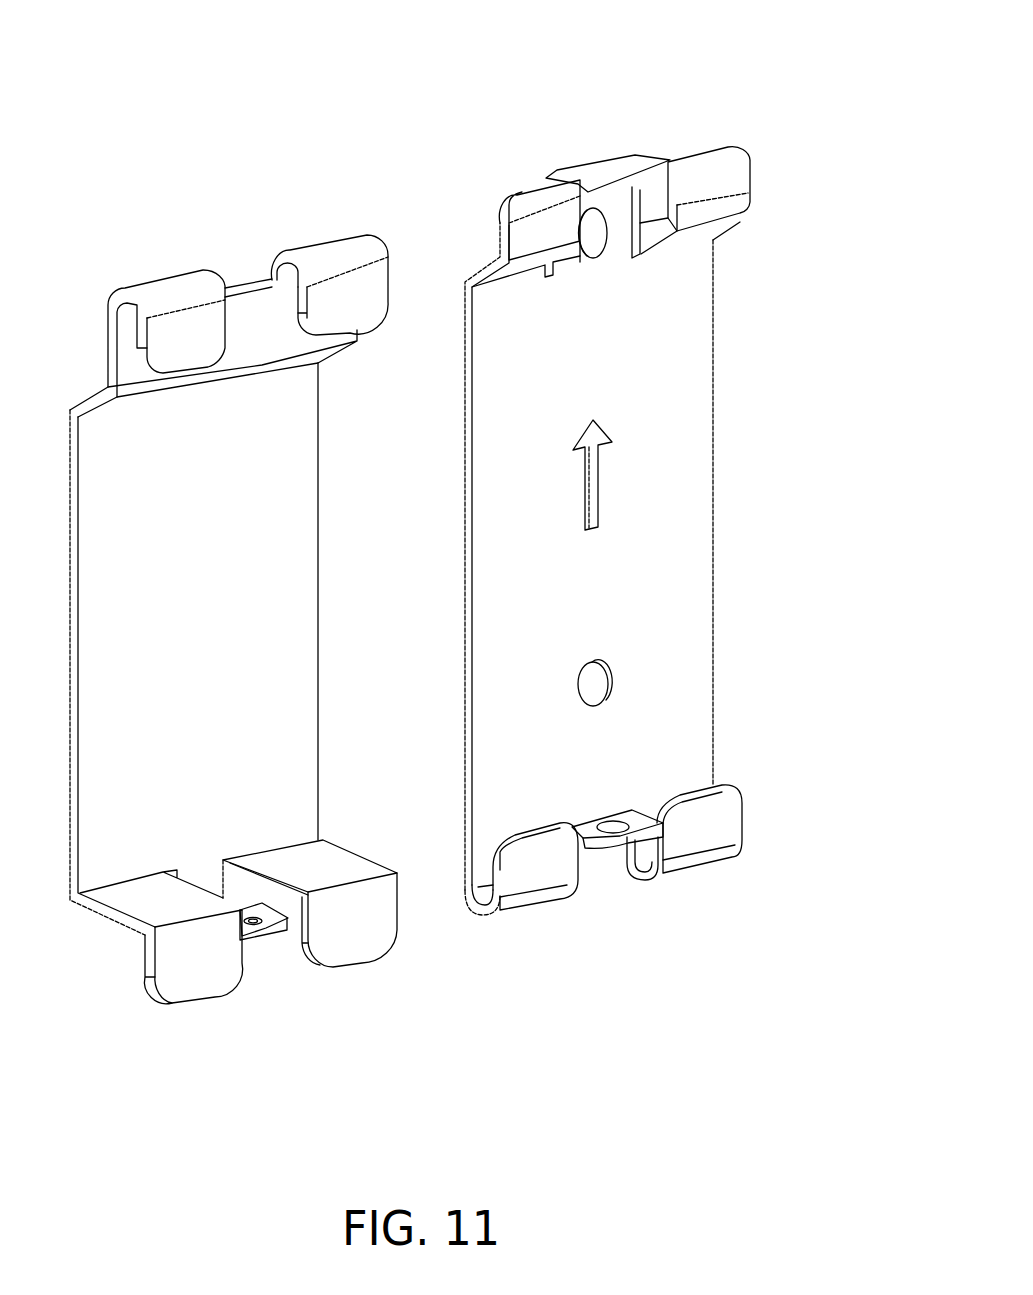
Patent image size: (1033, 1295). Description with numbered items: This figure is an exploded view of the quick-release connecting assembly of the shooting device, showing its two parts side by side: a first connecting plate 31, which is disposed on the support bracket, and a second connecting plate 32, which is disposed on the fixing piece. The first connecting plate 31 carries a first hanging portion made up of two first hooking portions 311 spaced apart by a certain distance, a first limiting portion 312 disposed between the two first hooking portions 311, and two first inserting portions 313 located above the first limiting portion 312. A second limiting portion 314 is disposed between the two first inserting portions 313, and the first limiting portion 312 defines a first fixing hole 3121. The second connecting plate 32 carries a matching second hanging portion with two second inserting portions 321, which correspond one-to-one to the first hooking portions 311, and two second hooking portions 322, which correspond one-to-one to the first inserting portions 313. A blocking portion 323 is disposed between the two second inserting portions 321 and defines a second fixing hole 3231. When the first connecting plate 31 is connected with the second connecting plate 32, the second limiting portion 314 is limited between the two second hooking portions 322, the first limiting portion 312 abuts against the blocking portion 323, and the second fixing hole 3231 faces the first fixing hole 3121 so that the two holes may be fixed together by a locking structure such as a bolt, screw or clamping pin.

The first connecting plate 31 is at (541, 33).
The second connecting plate 32 is at (170, 145).
The first hooking portion 311 is at (533, 863).
The first limiting portion 312 is at (638, 838).
The first fixing hole 3121 is at (613, 827).
The first inserting portion 313 is at (540, 190).
The second limiting portion 314 is at (618, 168).
The second inserting portion 321 is at (197, 975).
The second hooking portion 322 is at (170, 283).
The blocking portion 323 is at (265, 935).
The second fixing hole 3231 is at (250, 913).